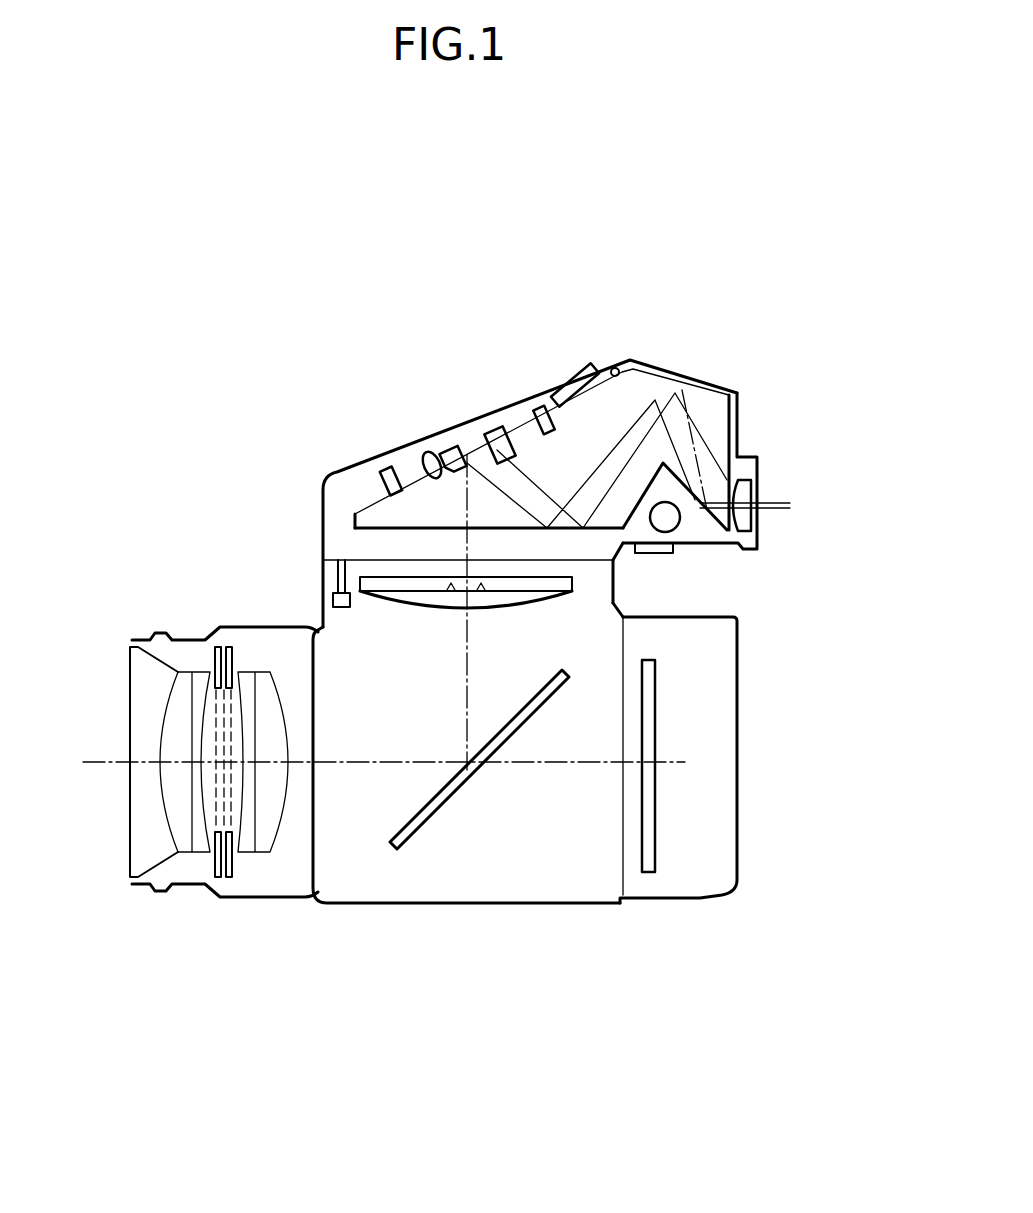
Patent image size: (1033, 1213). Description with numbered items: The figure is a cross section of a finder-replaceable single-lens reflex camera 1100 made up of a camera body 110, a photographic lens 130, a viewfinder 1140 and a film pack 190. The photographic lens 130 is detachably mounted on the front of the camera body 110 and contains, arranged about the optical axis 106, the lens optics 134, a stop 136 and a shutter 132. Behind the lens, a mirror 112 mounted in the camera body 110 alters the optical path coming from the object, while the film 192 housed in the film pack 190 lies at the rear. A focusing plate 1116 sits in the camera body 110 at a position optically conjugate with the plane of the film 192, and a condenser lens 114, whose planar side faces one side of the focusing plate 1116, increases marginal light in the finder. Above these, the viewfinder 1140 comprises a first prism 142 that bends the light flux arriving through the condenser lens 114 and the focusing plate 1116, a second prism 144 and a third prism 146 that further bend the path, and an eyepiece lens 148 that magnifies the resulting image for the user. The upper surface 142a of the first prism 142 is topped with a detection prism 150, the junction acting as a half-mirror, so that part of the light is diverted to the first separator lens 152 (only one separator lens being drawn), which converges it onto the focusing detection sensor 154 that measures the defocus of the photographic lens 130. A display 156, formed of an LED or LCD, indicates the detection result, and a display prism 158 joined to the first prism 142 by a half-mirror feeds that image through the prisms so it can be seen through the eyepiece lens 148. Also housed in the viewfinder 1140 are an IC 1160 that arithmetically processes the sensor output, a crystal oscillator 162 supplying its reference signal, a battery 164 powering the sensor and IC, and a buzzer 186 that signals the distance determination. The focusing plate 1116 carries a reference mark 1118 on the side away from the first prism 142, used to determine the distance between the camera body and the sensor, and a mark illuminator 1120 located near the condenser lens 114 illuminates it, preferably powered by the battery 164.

The single-lens reflex camera 1100 is at (722, 233).
The camera body 110 is at (553, 905).
The mirror 112 is at (408, 848).
The condenser lens 114 is at (573, 597).
The optical axis 106 is at (98, 757).
The photographic lens 130 is at (228, 625).
The shutter 132 is at (230, 872).
The lens optics 134 is at (173, 687).
The stop 136 is at (217, 872).
The first prism 142 is at (352, 522).
The upper surface of the first prism 142a is at (357, 510).
The second prism 144 is at (715, 398).
The third prism 146 is at (757, 462).
The eyepiece lens 148 is at (745, 492).
The detection prism 150 is at (450, 447).
The first separator lens 152 is at (420, 455).
The focusing detection sensor 154 is at (382, 468).
The display 156 is at (544, 407).
The display prism 158 is at (500, 428).
The crystal oscillator 162 is at (616, 368).
The battery 164 is at (675, 525).
The buzzer 186 is at (675, 555).
The film pack 190 is at (703, 900).
The film 192 is at (655, 740).
The focusing plate 1116 is at (610, 575).
The reference mark 1118 is at (447, 580).
The mark illuminator 1120 is at (335, 598).
The viewfinder 1140 is at (600, 320).
The IC 1160 is at (570, 378).